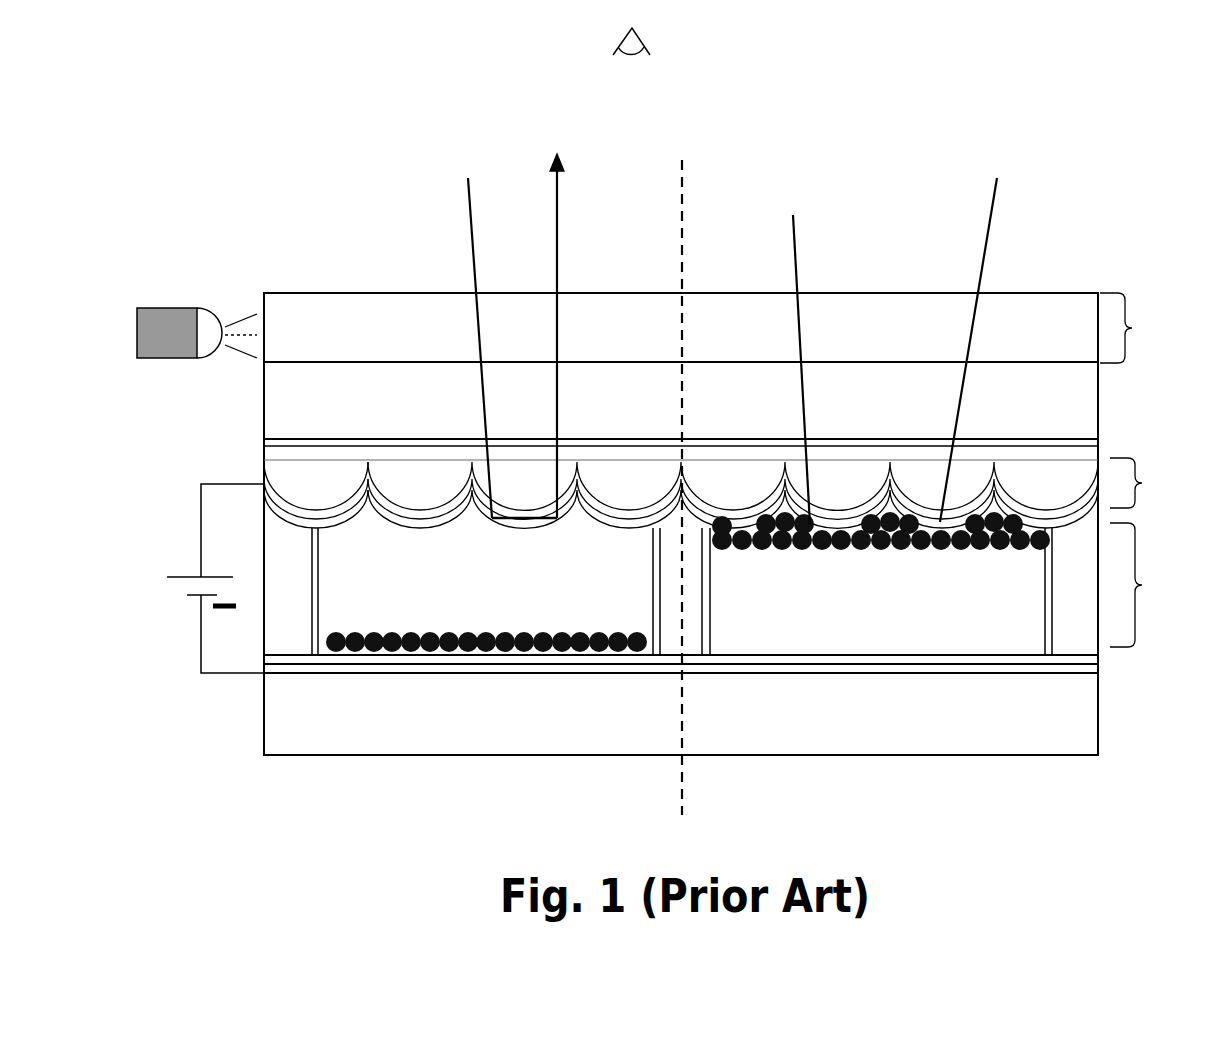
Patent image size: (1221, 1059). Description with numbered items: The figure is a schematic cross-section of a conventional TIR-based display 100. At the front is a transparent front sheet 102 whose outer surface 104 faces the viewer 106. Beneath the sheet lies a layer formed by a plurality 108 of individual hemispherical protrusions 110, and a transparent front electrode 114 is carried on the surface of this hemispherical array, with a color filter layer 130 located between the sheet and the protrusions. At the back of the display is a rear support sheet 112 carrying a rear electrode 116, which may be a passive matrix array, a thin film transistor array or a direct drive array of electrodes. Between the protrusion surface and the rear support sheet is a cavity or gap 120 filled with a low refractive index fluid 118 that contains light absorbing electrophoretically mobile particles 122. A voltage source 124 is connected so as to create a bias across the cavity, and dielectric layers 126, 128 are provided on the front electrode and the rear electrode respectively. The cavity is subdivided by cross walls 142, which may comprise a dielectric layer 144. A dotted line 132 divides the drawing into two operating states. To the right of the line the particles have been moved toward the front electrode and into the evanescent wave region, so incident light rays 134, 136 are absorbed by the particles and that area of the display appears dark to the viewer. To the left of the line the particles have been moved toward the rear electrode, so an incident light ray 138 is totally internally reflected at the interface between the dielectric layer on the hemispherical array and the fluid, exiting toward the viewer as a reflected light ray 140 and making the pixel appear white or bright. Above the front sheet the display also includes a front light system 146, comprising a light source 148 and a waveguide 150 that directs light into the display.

The TIR-based display 100 is at (1058, 252).
The transparent front sheet 102 is at (337, 414).
The outer surface 104 is at (350, 362).
The viewer 106 is at (645, 33).
The plurality of hemispherical protrusions 108 is at (1142, 483).
The hemispherical protrusion 110 is at (452, 491).
The rear support sheet 112 is at (337, 731).
The transparent front electrode 114 is at (332, 512).
The rear electrode 116 is at (462, 675).
The low refractive index fluid 118 is at (504, 566).
The cavity 120 is at (1146, 585).
The light absorbing electrophoretically mobile particles 122 is at (500, 636).
The voltage source 124 is at (201, 538).
The dielectric layer 126 is at (533, 528).
The dielectric layer 128 is at (815, 650).
The color filter layer 130 is at (576, 440).
The dotted line 132 is at (682, 238).
The incident light ray 134 is at (797, 273).
The incident light ray 136 is at (990, 200).
The incident light ray 138 is at (470, 237).
The reflected light ray 140 is at (557, 220).
The cross walls 142 is at (293, 565).
The dielectric layer 144 is at (318, 605).
The front light system 146 is at (1132, 328).
The light source 148 is at (178, 308).
The waveguide 150 is at (919, 331).